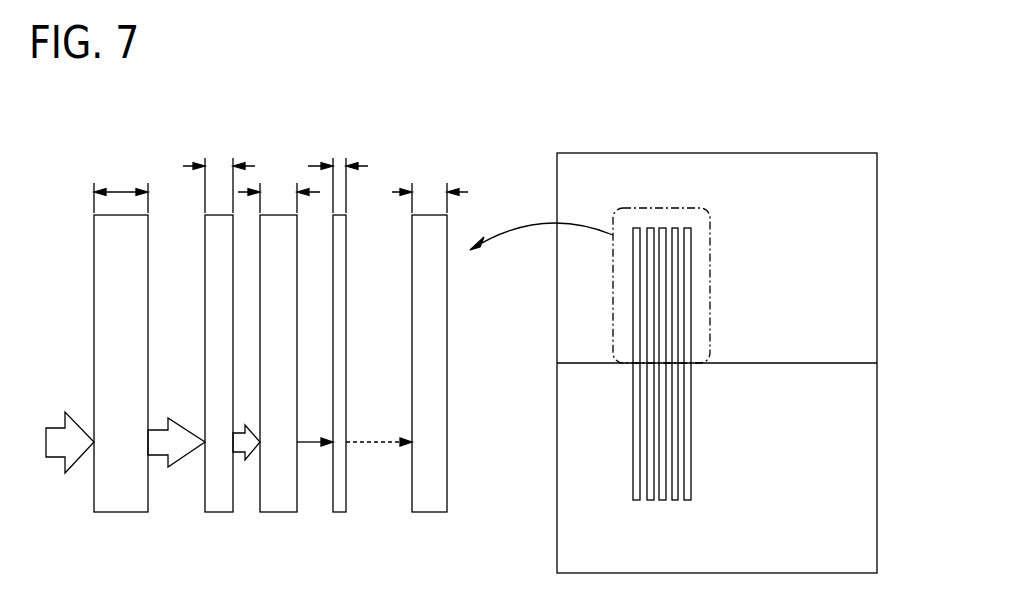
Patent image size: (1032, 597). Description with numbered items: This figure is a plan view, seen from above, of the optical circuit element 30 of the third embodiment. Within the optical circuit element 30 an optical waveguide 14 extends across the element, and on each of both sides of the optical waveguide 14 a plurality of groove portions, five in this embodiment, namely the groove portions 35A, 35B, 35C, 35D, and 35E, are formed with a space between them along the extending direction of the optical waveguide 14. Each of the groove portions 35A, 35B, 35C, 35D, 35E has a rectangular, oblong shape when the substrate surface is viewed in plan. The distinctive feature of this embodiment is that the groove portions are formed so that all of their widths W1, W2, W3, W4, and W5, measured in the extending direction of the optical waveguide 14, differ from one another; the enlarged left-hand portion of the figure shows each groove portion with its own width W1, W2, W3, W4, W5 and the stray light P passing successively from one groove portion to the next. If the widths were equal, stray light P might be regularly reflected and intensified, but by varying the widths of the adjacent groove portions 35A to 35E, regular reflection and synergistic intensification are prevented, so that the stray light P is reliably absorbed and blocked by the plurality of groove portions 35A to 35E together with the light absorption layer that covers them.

The groove portion 35A is at (121, 543).
The groove portion 35B is at (219, 543).
The groove portion 35C is at (278, 543).
The groove portion 35D is at (340, 543).
The groove portion 35E is at (430, 543).
The optical circuit element 30 is at (818, 87).
The optical waveguide 14 is at (832, 363).
The width of groove portion W1 is at (121, 187).
The width of groove portion W2 is at (219, 172).
The width of groove portion W3 is at (279, 187).
The width of groove portion W4 is at (338, 172).
The width of groove portion W5 is at (430, 187).
The stray light P is at (58, 396).